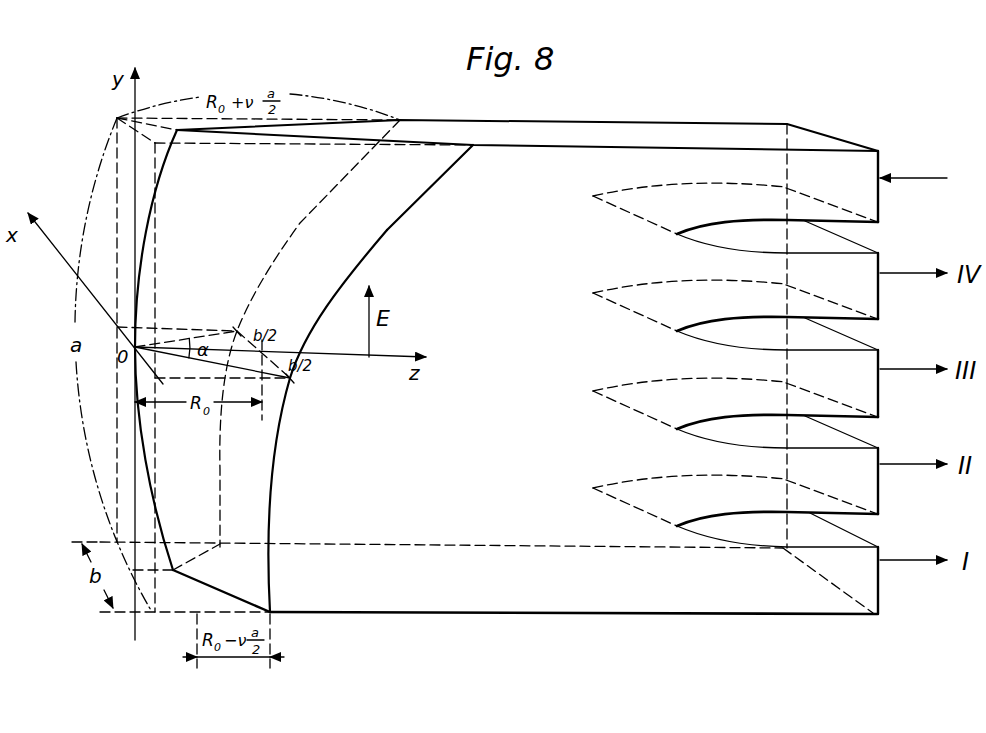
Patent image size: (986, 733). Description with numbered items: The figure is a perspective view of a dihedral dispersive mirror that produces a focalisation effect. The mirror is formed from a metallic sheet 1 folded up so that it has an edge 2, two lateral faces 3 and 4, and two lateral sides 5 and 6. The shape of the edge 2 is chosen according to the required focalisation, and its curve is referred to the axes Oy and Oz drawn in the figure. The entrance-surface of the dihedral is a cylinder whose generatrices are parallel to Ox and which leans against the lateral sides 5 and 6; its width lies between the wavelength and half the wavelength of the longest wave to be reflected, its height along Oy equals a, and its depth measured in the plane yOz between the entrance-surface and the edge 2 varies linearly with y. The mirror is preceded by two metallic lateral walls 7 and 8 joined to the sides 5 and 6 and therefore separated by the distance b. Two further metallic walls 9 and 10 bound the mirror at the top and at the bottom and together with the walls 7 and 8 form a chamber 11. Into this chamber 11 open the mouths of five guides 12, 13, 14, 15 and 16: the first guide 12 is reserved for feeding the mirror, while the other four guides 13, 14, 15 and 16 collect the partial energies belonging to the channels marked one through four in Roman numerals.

The metallic sheet 1 is at (213, 253).
The edge 2 is at (147, 243).
The lateral face 3 is at (378, 127).
The lateral face 4 is at (452, 153).
The lateral side 5 is at (332, 188).
The lateral side 6 is at (387, 228).
The metallic lateral wall 7 is at (530, 152).
The metallic lateral wall 8 is at (478, 540).
The metallic wall 9 is at (615, 135).
The metallic wall 10 is at (568, 574).
The chamber 11 is at (512, 362).
The guide 12 is at (878, 205).
The guide 13 is at (878, 303).
The guide 14 is at (878, 403).
The guide 15 is at (878, 494).
The guide 16 is at (878, 589).